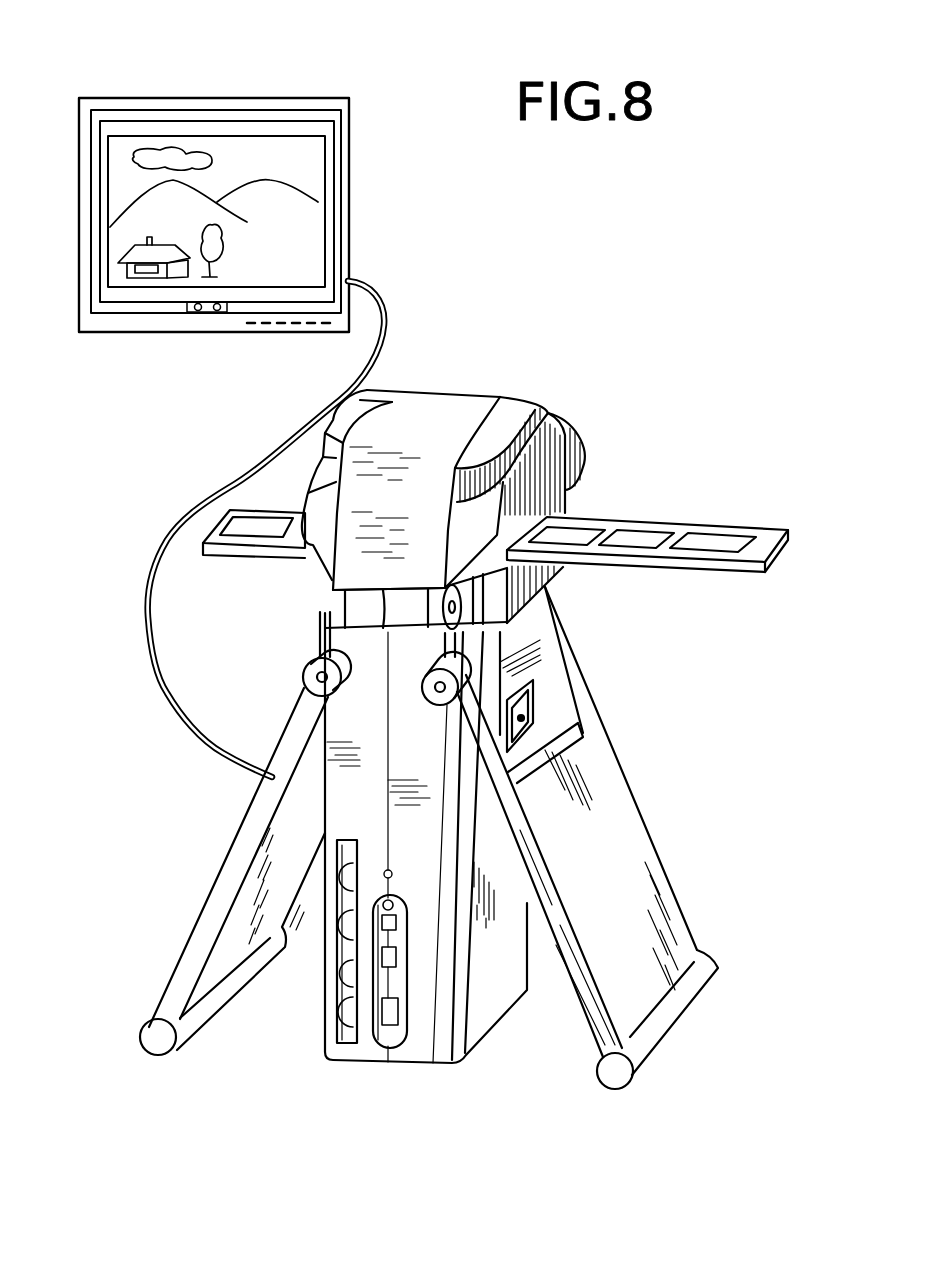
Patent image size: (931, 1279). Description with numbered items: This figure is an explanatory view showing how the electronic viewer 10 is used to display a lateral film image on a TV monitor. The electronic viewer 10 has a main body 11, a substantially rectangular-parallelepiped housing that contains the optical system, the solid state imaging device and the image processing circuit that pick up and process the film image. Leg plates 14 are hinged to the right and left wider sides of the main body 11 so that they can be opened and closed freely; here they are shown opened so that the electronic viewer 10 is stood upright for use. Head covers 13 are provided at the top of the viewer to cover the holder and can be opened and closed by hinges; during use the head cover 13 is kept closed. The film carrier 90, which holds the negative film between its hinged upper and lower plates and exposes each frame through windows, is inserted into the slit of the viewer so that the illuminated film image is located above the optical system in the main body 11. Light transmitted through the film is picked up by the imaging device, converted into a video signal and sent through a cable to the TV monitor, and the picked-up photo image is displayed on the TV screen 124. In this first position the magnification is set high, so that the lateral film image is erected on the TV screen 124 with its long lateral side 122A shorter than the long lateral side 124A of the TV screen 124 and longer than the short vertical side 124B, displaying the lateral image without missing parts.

The electronic viewer 10 is at (612, 472).
The main body 11 is at (491, 1001).
The head cover 13 is at (427, 427).
The leg plate 14 is at (625, 814).
The film carrier 90 is at (765, 527).
The long (lateral) side of the lateral film image 122A is at (225, 133).
The TV screen 124 is at (250, 392).
The long (lateral) side of the TV screen 124A is at (277, 117).
The short (vertical) side of the TV screen 124B is at (335, 210).